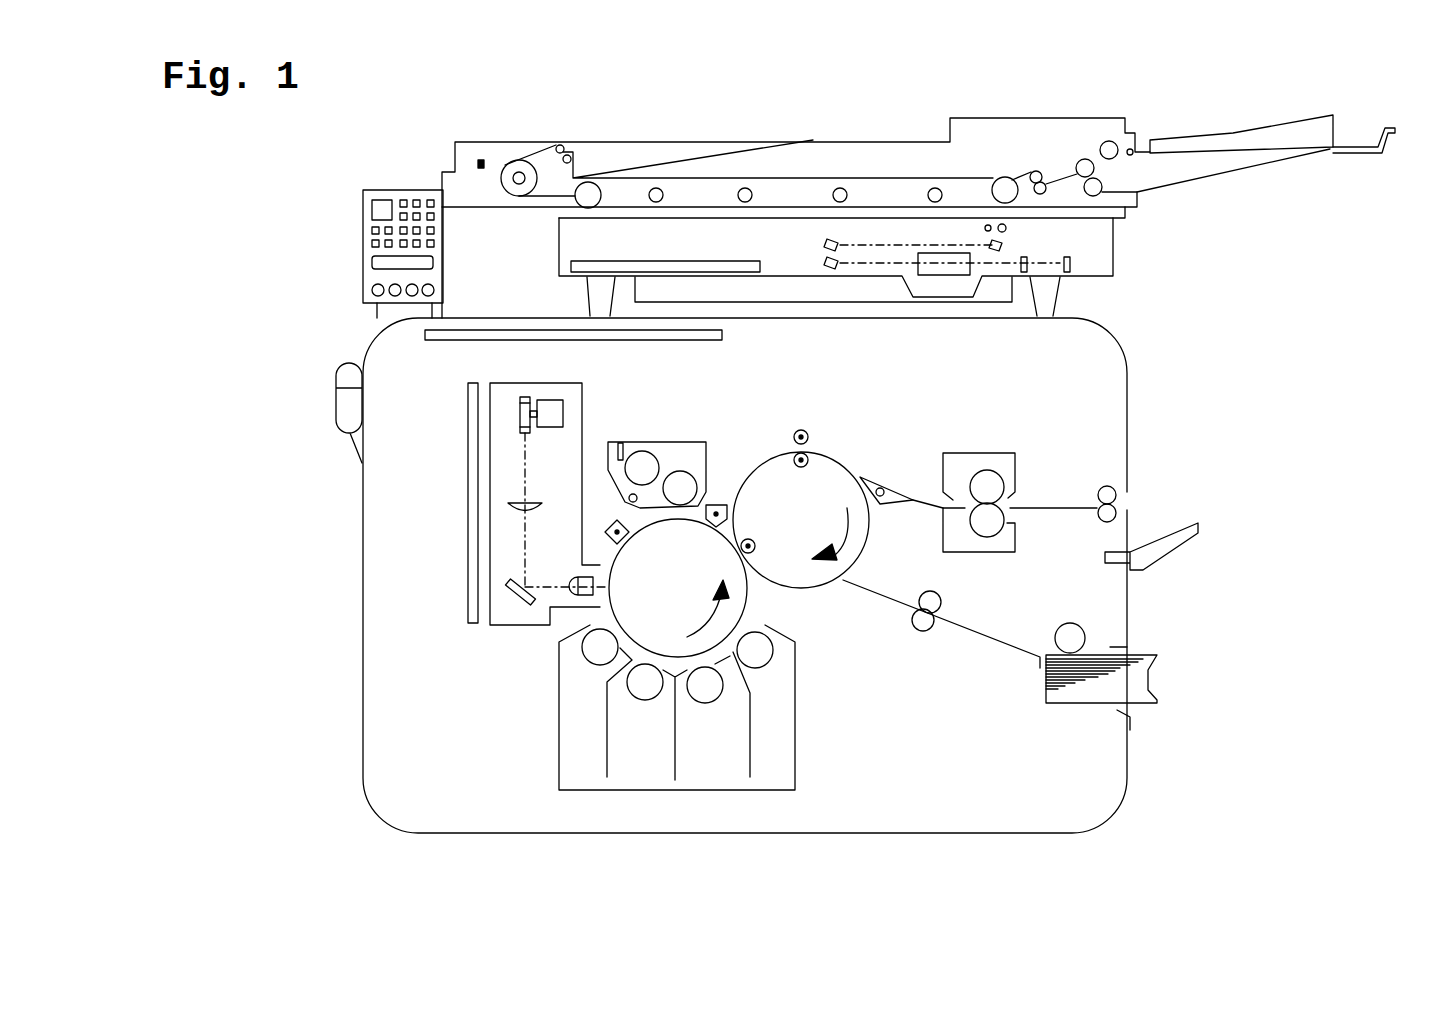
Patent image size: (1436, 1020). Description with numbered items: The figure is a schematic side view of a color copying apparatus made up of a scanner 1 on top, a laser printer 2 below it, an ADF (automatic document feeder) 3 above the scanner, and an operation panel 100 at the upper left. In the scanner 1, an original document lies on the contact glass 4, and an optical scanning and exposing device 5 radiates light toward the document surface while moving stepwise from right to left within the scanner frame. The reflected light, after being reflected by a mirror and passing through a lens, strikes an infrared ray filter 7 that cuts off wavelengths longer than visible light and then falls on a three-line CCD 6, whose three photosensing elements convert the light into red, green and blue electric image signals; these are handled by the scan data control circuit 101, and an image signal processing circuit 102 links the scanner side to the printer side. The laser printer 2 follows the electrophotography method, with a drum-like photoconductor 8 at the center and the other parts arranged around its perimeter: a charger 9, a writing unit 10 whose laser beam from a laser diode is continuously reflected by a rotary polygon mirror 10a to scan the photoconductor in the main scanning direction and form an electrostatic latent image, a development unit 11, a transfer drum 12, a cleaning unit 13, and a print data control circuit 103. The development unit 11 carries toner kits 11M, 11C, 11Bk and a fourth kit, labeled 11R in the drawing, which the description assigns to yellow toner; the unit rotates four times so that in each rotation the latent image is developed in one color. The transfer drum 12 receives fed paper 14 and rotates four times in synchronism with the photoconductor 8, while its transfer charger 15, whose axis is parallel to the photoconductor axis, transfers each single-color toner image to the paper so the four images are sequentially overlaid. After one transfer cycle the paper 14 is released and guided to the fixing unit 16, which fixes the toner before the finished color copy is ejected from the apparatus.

The scanner 1 is at (1118, 258).
The laser printer 2 is at (363, 652).
The ADF (automatic document feeder) 3 is at (853, 140).
The contact glass 4 is at (712, 215).
The optical scanning and exposing device 5 is at (905, 247).
The three-line CCD 6 is at (1070, 263).
The infrared ray filter 7 is at (1030, 257).
The drum-like photoconductor 8 is at (750, 593).
The charger 9 is at (611, 520).
The writing unit 10 is at (445, 485).
The rotary polygon mirror 10a is at (521, 405).
The development unit 11 is at (613, 774).
The toner kit 11M is at (588, 750).
The toner kit 11C is at (648, 757).
The red developing unit 11R is at (713, 757).
The toner kit 11Bk is at (772, 757).
The transfer drum 12 is at (835, 453).
The cleaning unit 13 is at (668, 458).
The paper 14 is at (1150, 653).
The transfer charger 15 is at (757, 537).
The fixing unit 16 is at (987, 462).
The operation panel 100 is at (380, 276).
The scan data control circuit 101 is at (617, 267).
The image signal processing circuit 102 is at (448, 345).
The print data control circuit 103 is at (467, 570).